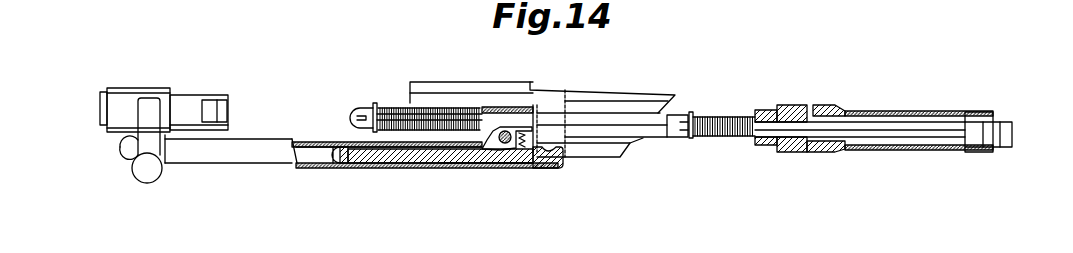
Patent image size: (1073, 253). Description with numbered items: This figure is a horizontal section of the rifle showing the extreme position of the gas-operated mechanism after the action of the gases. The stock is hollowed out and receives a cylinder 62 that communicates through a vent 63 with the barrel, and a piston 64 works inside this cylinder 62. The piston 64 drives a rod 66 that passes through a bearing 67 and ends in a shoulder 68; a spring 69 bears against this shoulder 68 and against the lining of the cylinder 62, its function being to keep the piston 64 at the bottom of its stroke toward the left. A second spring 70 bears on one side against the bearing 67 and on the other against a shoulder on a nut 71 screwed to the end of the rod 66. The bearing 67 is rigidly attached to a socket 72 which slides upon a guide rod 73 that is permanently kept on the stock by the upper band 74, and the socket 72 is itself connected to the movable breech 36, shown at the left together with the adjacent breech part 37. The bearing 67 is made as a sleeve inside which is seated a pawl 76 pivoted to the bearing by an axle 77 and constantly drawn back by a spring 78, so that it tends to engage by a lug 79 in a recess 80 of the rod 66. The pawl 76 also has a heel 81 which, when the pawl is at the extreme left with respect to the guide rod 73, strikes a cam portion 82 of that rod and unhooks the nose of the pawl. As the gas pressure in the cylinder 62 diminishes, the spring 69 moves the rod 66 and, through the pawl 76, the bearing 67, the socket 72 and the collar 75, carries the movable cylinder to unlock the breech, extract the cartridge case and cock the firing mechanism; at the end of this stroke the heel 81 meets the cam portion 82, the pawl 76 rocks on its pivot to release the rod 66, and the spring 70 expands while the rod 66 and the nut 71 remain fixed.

The movable breech 36 is at (115, 91).
The side block 37 is at (198, 103).
The cylinder 62 is at (854, 152).
The vent 63 is at (820, 104).
The piston 64 is at (969, 130).
The rod 66 is at (441, 117).
The bearing 67 is at (484, 112).
The shoulder 68 is at (691, 113).
The spring 69 is at (714, 140).
The second spring 70 is at (388, 133).
The nut 71 is at (360, 113).
The socket 72 is at (303, 168).
The guide rod 73 is at (431, 164).
The upper band 74 is at (560, 158).
The collar 75 is at (142, 150).
The pawl 76 is at (516, 150).
The axle 77 is at (506, 146).
The spring 78 is at (532, 141).
The lug 79 is at (514, 128).
The recess 80 is at (530, 112).
The heel 81 is at (474, 166).
The cam portion 82 is at (350, 170).